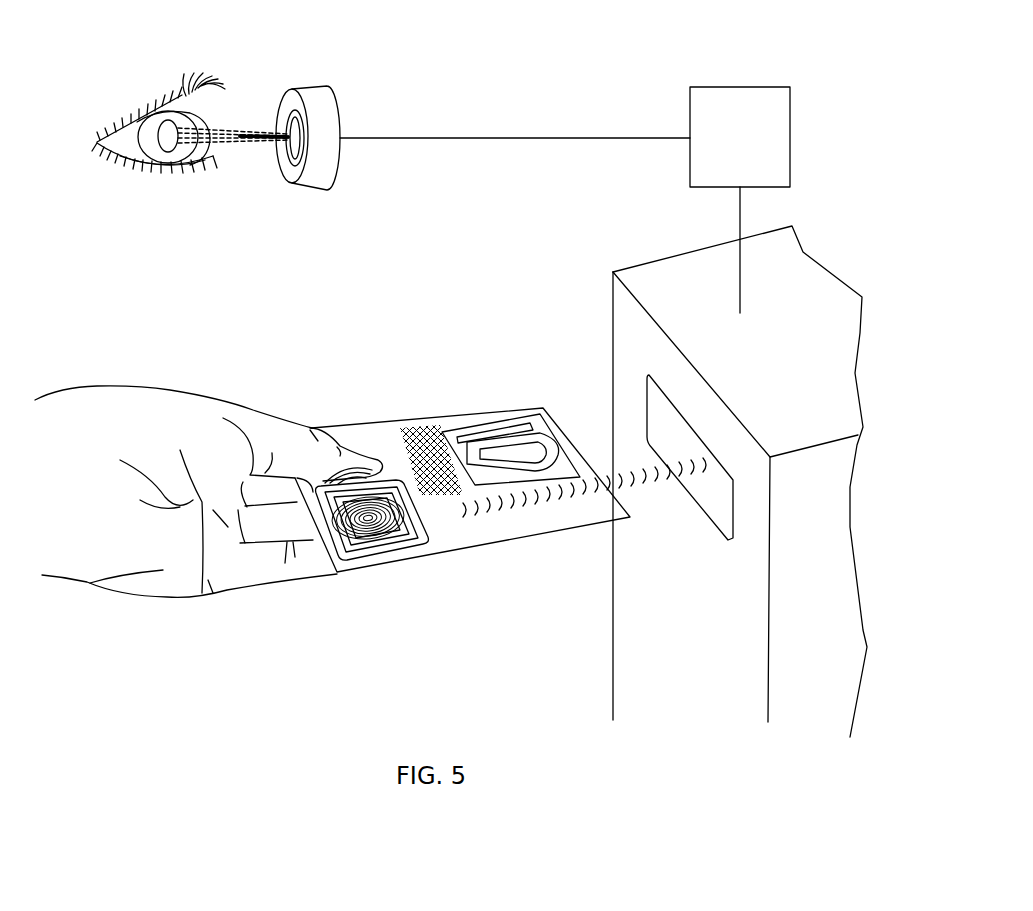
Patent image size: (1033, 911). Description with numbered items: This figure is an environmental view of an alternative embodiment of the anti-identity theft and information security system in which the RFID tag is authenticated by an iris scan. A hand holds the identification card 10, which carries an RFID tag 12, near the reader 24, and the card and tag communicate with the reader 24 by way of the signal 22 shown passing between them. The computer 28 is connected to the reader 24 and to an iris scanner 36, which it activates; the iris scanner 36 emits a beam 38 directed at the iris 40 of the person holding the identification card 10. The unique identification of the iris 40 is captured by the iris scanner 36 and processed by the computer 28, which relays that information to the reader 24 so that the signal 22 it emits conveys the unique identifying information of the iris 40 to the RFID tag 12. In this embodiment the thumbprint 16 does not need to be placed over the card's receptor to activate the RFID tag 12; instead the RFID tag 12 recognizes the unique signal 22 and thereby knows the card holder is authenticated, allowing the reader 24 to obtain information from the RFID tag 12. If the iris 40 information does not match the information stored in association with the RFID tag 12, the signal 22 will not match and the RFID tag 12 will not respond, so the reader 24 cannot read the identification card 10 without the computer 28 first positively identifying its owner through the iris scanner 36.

The identification card 10 is at (382, 438).
The RFID tag 12 is at (423, 542).
The thumbprint 16 is at (348, 485).
The signal 22 is at (640, 478).
The reader 24 is at (623, 340).
The computer 28 is at (783, 113).
The iris scanner 36 is at (328, 122).
The beam 38 is at (235, 130).
The iris 40 is at (167, 127).